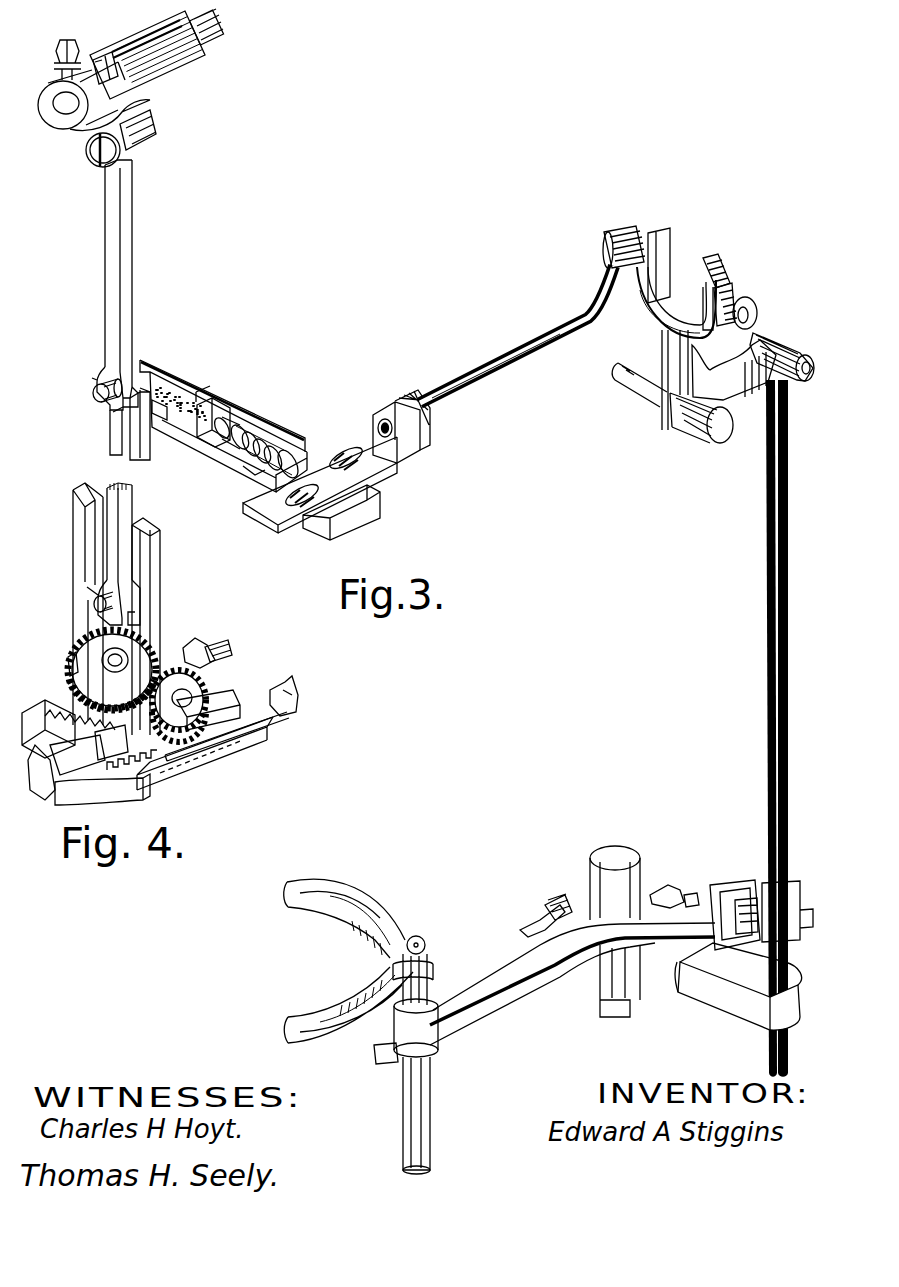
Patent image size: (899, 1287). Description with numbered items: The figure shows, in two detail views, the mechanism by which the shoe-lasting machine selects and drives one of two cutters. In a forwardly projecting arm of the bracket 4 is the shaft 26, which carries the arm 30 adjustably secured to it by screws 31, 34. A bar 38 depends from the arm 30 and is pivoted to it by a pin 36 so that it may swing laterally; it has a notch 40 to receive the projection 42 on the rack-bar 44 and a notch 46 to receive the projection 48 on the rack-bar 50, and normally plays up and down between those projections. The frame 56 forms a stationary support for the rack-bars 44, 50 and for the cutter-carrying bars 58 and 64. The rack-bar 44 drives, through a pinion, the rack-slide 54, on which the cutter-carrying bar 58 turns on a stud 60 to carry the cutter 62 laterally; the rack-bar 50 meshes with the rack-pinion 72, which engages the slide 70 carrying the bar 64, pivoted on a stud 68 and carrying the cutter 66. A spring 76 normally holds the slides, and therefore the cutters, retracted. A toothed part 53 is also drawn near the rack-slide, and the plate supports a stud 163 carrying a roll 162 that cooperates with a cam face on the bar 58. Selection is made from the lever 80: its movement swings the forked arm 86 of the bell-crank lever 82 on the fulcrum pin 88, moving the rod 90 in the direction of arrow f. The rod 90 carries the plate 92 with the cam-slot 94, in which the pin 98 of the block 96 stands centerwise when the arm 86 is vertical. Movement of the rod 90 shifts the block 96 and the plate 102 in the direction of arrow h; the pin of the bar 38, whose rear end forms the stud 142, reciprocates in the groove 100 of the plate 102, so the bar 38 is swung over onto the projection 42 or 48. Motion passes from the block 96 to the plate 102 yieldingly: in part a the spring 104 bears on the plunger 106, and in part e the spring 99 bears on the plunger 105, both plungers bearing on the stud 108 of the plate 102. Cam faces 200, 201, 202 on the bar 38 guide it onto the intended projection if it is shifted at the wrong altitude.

In FIG. 3, the bracket 4 is at (193, 72).
In FIG. 3, the shaft 26 is at (217, 27).
In FIG. 3, the arm 30 is at (152, 113).
In FIG. 3, the screw 31 is at (67, 40).
In FIG. 3, the screw 34 is at (97, 47).
In FIG. 3, the pin 36 is at (92, 157).
In FIG. 3, the bar 38 is at (132, 205).
In FIG. 4, the bar 38 is at (132, 502).
In FIG. 3, the notch 40 is at (97, 385).
In FIG. 3, the stud 142 is at (95, 398).
In FIG. 4, the stud 142 is at (96, 610).
In FIG. 3, the notch 46 is at (110, 410).
In FIG. 3, the cam face 201 is at (103, 372).
In FIG. 3, the cam face 202 is at (113, 412).
In FIG. 3, the groove 100 is at (123, 452).
In FIG. 3, the block 96 is at (212, 450).
In FIG. 3, the plunger 105 is at (207, 407).
In FIG. 3, the spring 99 is at (182, 392).
In FIG. 3, the plate 102 is at (201, 387).
In FIG. 3, the cam face 200 is at (140, 370).
In FIG. 3, the arrow h is at (158, 338).
In FIG. 3, the part of block e is at (193, 397).
In FIG. 3, the stud 108 is at (212, 425).
In FIG. 3, the plunger 106 is at (230, 433).
In FIG. 3, the spring 104 is at (252, 448).
In FIG. 3, the part of block a is at (247, 467).
In FIG. 3, the plate 92 is at (377, 480).
In FIG. 3, the pin 98 is at (322, 477).
In FIG. 3, the cam-slot 94 is at (278, 527).
In FIG. 3, the rod 90 is at (465, 391).
In FIG. 3, the arrow f is at (477, 355).
In FIG. 3, the forked arm 86 is at (637, 300).
In FIG. 3, the bell-crank lever 82 is at (743, 400).
In FIG. 3, the fulcrum pin 88 is at (643, 397).
In FIG. 3, the lever 80 is at (490, 1017).
In FIG. 4, the rack-bar 44 is at (75, 537).
In FIG. 4, the rack-bar 50 is at (157, 550).
In FIG. 4, the projection 42 is at (87, 587).
In FIG. 4, the projection 48 is at (133, 618).
In FIG. 4, the spring 76 is at (127, 653).
In FIG. 4, the stud 60 is at (68, 662).
In FIG. 4, the rack-pinion 72 is at (195, 683).
In FIG. 4, the cutter-carrying bar 58 is at (187, 640).
In FIG. 4, the cutter 62 is at (210, 650).
In FIG. 4, the stud 68 is at (208, 710).
In FIG. 4, the cutter 66 is at (273, 687).
In FIG. 4, the rack teeth 53 is at (70, 680).
In FIG. 4, the stud 163 is at (67, 705).
In FIG. 4, the rack-slide 54 is at (53, 757).
In FIG. 4, the roll 162 is at (117, 740).
In FIG. 4, the slide 70 is at (187, 767).
In FIG. 4, the frame 56 is at (143, 780).
In FIG. 4, the cutter-carrying bar 64 is at (107, 790).